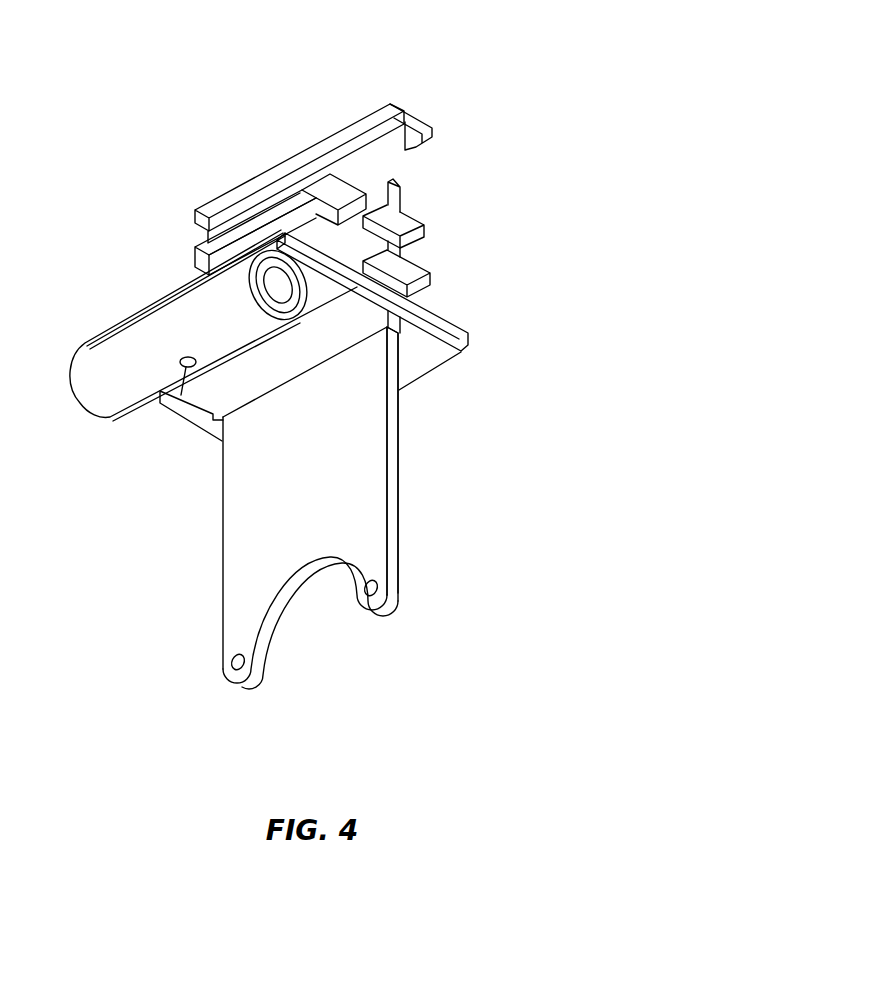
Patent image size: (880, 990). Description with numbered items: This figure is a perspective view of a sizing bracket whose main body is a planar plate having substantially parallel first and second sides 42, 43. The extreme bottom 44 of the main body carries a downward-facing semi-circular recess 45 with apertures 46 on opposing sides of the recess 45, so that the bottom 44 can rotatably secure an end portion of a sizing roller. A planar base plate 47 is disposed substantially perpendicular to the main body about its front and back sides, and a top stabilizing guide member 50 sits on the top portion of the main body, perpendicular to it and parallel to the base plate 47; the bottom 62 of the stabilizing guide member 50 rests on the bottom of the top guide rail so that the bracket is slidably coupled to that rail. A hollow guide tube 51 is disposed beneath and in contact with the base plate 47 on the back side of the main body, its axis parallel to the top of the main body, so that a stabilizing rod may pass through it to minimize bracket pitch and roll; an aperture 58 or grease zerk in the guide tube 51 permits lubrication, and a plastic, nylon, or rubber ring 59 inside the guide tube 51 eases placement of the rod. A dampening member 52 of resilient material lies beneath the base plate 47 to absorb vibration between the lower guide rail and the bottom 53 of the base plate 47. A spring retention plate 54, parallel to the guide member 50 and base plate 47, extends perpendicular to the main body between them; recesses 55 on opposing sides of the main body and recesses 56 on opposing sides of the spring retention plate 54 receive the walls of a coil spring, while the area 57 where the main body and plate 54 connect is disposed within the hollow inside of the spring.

The first side 42 is at (394, 462).
The second side 43 is at (222, 517).
The bottom 44 is at (368, 544).
The semi-circular recess 45 is at (303, 597).
The apertures 46 is at (228, 668).
The planar base plate 47 is at (455, 330).
The top stabilizing guide member 50 is at (293, 158).
The hollow guide tube 51 is at (117, 390).
The dampening member 52 is at (431, 357).
The bottom of base plate 53 is at (202, 243).
The spring retention plate 54 is at (268, 218).
The recesses 55 is at (398, 175).
The recesses 56 is at (336, 207).
The area 57 is at (401, 217).
The aperture 58 is at (186, 368).
The ring 59 is at (255, 270).
The bottom of stabilizing member 62 is at (394, 126).